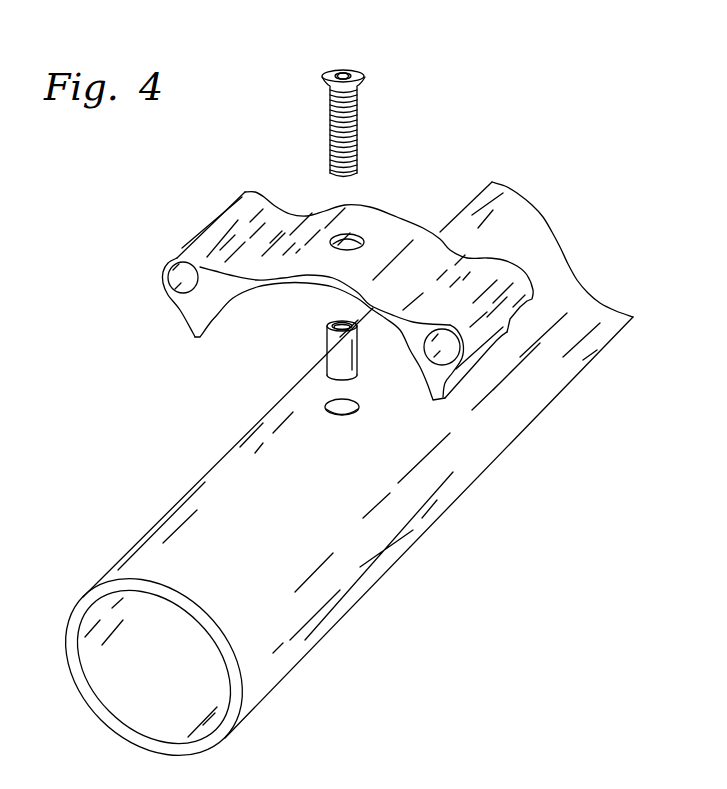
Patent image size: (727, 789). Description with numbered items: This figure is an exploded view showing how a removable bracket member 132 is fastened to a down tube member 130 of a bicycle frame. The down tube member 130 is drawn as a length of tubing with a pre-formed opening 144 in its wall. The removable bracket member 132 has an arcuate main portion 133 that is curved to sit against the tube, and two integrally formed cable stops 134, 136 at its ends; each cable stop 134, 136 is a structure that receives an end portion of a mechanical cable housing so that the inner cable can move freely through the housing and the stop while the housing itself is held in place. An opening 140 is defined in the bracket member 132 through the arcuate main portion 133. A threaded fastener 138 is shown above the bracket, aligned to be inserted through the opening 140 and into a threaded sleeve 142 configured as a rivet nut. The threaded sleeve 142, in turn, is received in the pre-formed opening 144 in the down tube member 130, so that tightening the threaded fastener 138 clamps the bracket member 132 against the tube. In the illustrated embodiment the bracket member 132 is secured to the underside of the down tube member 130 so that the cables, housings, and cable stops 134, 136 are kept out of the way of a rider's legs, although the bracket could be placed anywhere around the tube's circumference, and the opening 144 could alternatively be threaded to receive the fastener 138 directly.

The down tube member 130 is at (331, 485).
The removable bracket member 132 is at (322, 207).
The arcuate main portion 133 is at (364, 257).
The cable stop 134 is at (205, 228).
The cable stop 136 is at (510, 275).
The threaded fastener 138 is at (360, 72).
The opening 140 is at (372, 244).
The threaded sleeve 142 is at (327, 339).
The pre-formed opening 144 is at (325, 407).